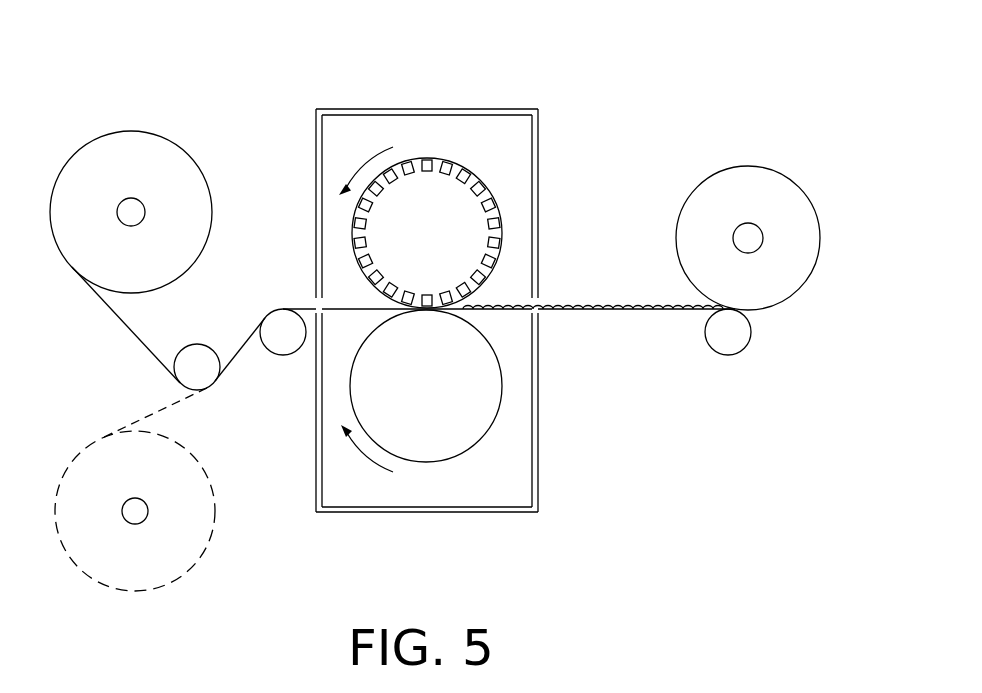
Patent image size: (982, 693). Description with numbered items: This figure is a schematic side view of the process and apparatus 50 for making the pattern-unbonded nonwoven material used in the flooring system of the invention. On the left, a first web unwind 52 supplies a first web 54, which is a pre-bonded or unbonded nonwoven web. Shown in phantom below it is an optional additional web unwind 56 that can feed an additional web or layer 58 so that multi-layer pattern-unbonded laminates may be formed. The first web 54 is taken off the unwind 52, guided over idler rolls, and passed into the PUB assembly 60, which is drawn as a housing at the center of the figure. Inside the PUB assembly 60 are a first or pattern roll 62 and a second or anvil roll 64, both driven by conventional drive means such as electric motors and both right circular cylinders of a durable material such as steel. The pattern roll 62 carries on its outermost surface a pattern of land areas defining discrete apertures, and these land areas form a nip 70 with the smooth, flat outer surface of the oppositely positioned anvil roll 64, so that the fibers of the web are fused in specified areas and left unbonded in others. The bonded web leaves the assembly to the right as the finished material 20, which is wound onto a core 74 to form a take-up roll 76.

The process and apparatus 50 is at (265, 89).
The first web unwind 52 is at (138, 205).
The first web 54 is at (140, 338).
The additional web unwind 56 is at (148, 510).
The additional web or layer 58 is at (132, 427).
The PUB assembly 60 is at (586, 412).
The pattern roll 62 is at (487, 215).
The anvil roll 64 is at (457, 430).
The nip 70 is at (517, 325).
The embossed web 20 is at (579, 295).
The core 74 is at (763, 235).
The take-up roll 76 is at (778, 182).